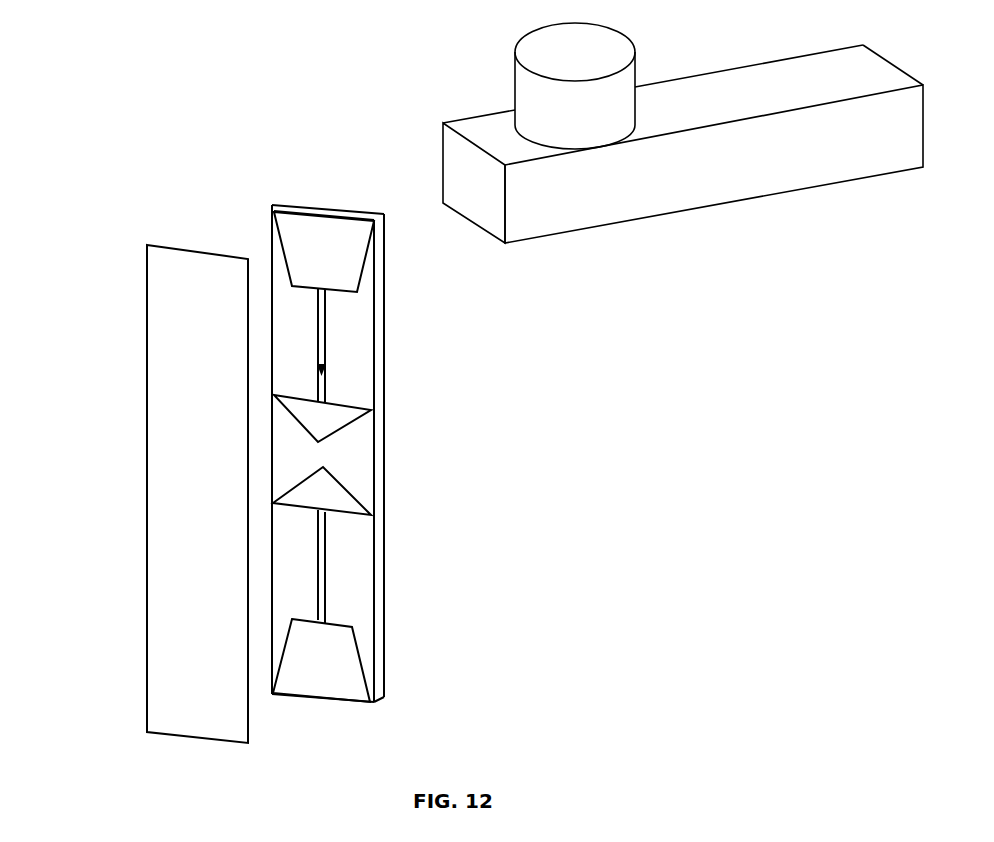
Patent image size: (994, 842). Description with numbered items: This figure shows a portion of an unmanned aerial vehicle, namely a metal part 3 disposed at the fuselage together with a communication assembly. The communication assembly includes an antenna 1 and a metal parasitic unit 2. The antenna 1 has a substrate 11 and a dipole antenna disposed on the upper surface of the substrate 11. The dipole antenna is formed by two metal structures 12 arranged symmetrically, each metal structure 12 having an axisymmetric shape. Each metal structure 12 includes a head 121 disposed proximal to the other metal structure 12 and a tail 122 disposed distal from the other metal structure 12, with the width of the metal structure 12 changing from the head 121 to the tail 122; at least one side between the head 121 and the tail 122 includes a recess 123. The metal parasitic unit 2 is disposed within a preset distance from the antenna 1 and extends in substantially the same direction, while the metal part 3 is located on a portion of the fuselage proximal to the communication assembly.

The antenna 1 is at (354, 426).
The metal parasitic unit 2 is at (134, 494).
The metal part 3 is at (683, 176).
The substrate 11 is at (372, 453).
The metal structure 12 is at (354, 426).
The head 121 is at (380, 461).
The tail 122 is at (298, 221).
The recess 123 is at (402, 366).